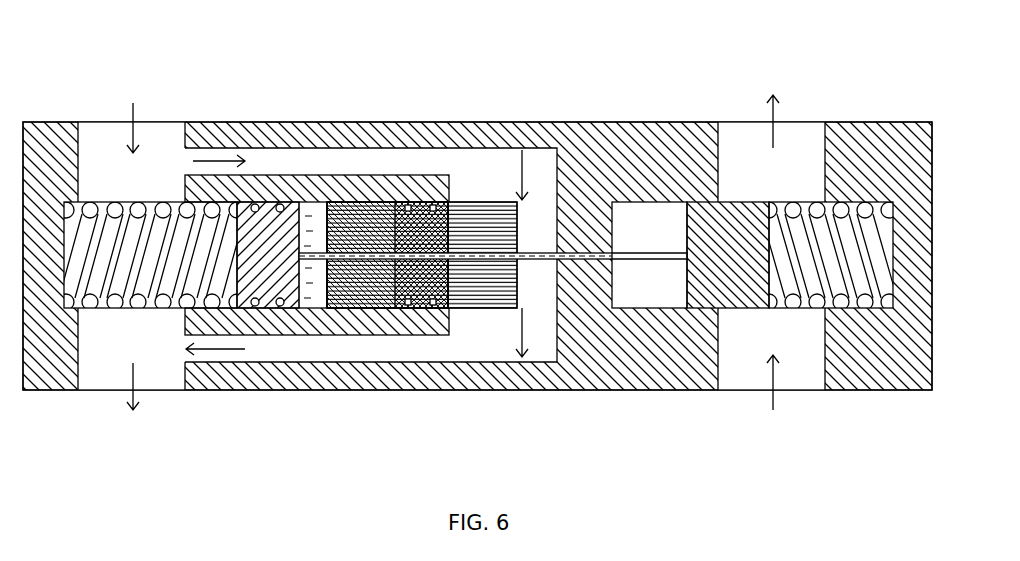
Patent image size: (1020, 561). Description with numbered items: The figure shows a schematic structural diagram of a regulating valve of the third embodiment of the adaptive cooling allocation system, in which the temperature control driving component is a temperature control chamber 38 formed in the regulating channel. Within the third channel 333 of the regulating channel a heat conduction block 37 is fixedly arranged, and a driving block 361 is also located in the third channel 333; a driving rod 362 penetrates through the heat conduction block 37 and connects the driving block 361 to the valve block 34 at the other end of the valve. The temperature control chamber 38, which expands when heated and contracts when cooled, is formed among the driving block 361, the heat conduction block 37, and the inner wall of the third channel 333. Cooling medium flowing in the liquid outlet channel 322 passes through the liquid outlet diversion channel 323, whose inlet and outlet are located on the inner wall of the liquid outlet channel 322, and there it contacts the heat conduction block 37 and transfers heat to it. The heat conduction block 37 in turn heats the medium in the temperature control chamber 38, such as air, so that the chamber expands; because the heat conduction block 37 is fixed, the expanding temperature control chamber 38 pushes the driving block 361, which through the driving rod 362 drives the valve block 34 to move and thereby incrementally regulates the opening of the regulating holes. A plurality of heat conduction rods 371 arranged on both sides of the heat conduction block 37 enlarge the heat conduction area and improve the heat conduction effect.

The liquid outlet channel 322 is at (80, 132).
The liquid outlet diversion channel 323 is at (230, 123).
The temperature control chamber 38 is at (318, 203).
The heat conduction block 37 is at (433, 205).
The driving block 361 is at (265, 310).
The third channel 333 is at (363, 310).
The heat conduction rods 371 is at (487, 310).
The driving rod 362 is at (641, 262).
The valve block 34 is at (738, 310).